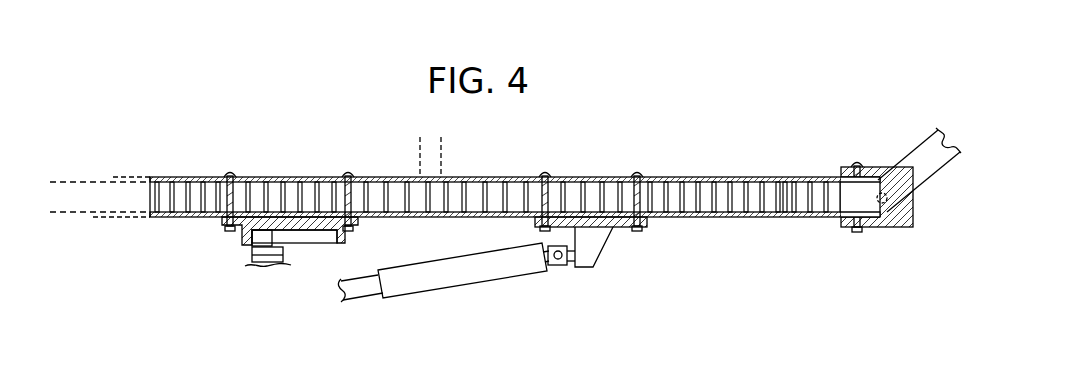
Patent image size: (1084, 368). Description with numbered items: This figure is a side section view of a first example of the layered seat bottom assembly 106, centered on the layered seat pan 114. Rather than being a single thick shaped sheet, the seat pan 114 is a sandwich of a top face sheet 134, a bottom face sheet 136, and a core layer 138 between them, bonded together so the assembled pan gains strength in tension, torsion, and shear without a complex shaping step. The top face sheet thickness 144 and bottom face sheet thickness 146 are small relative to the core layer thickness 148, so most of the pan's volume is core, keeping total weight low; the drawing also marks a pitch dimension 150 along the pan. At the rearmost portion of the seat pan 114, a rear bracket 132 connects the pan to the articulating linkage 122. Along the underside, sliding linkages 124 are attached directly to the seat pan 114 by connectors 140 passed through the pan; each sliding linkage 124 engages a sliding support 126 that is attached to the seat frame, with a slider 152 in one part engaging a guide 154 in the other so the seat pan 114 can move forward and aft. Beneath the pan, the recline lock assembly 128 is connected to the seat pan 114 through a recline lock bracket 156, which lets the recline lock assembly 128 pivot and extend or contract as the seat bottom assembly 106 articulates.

The seat bottom assembly 106 is at (515, 145).
The seat pan 114 is at (672, 178).
The articulating linkage 122 is at (920, 146).
The sliding linkage 124 is at (222, 218).
The sliding support 126 is at (262, 258).
The recline lock assembly 128 is at (458, 318).
The rear bracket 132 is at (890, 228).
The top face sheet 134 is at (722, 180).
The bottom face sheet 136 is at (759, 218).
The core layer 138 is at (786, 200).
The connectors 140 is at (232, 176).
The top face sheet thickness 144 is at (130, 208).
The bottom face sheet thickness 146 is at (100, 183).
The core layer thickness 148 is at (62, 242).
The slat pitch 150 is at (478, 153).
The slider 152 is at (258, 233).
The guide 154 is at (303, 240).
The recline lock bracket 156 is at (568, 258).